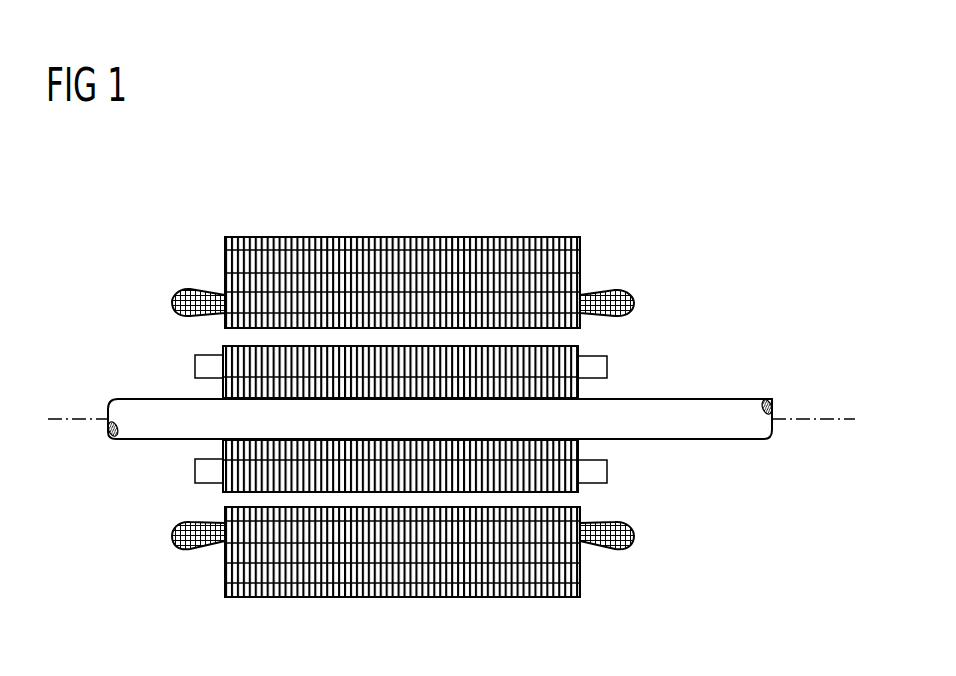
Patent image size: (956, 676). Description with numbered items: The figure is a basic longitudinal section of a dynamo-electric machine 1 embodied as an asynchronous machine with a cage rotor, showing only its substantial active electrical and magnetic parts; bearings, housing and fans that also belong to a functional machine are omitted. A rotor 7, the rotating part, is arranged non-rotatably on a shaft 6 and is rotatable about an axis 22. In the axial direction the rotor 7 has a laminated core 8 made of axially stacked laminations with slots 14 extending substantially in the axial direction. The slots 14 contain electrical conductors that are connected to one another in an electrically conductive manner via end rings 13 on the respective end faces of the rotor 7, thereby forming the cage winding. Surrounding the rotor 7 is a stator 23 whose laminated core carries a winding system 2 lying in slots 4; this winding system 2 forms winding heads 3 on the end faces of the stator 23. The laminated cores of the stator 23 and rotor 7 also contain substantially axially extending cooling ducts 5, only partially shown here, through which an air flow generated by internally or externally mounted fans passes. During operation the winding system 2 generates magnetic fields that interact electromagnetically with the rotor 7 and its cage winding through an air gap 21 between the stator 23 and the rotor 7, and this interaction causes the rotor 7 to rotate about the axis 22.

The dynamo-electric machine 1 is at (547, 182).
The winding system 2 is at (665, 294).
The winding heads 3 is at (602, 293).
The slots 4 is at (570, 302).
The cooling ducts 5 is at (300, 252).
The shaft 6 is at (717, 428).
The rotor 7 is at (583, 487).
The laminated core 8 is at (578, 446).
The end rings 13 is at (178, 476).
The slots 14 is at (580, 362).
The air gap 21 is at (228, 338).
The axis 22 is at (846, 421).
The stator 23 is at (226, 263).